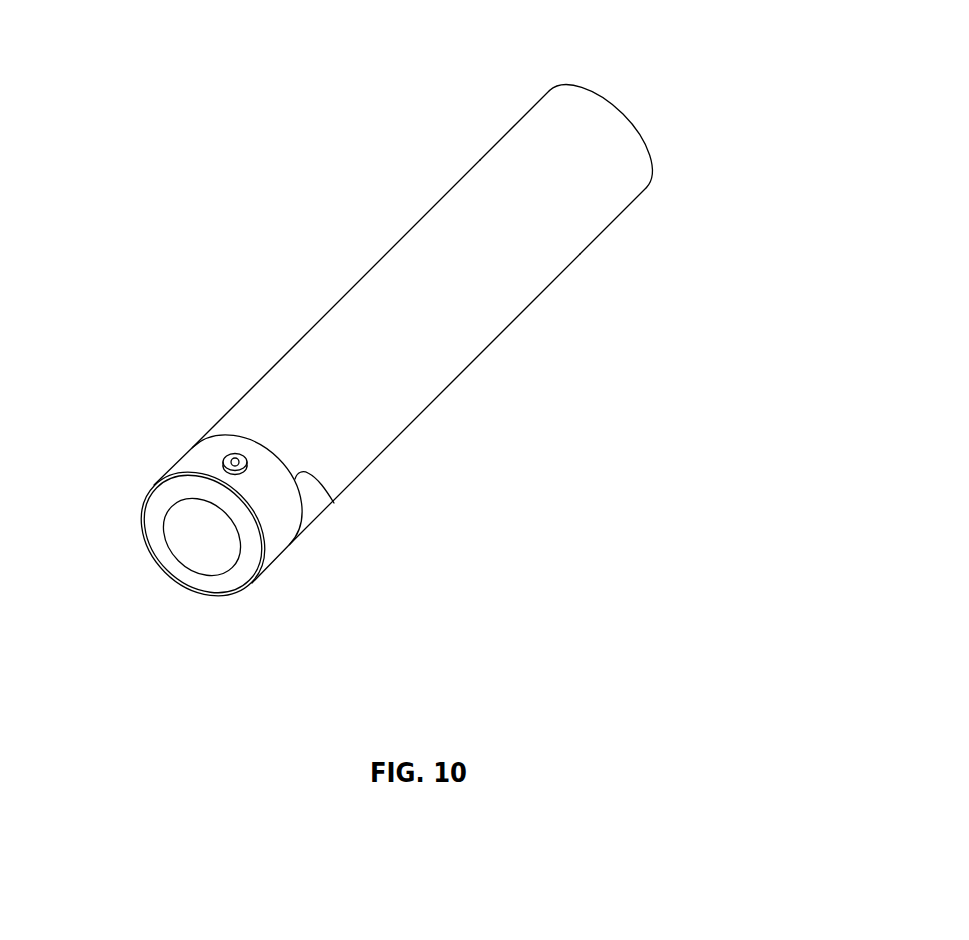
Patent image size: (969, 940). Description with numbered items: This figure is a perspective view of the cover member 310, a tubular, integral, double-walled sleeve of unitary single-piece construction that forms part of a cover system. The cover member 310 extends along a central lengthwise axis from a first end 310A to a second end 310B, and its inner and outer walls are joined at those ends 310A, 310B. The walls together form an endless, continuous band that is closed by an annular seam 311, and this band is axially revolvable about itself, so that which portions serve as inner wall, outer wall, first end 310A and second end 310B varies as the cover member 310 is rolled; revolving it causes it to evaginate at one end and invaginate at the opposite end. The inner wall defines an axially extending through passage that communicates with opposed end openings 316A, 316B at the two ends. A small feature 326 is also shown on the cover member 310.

The cover member 310 is at (403, 337).
The first end 310A is at (232, 507).
The second end 310B is at (614, 140).
The annular seam 311 is at (333, 503).
The end opening 316A is at (181, 565).
The end opening 316B is at (645, 113).
The boss 326 is at (236, 453).